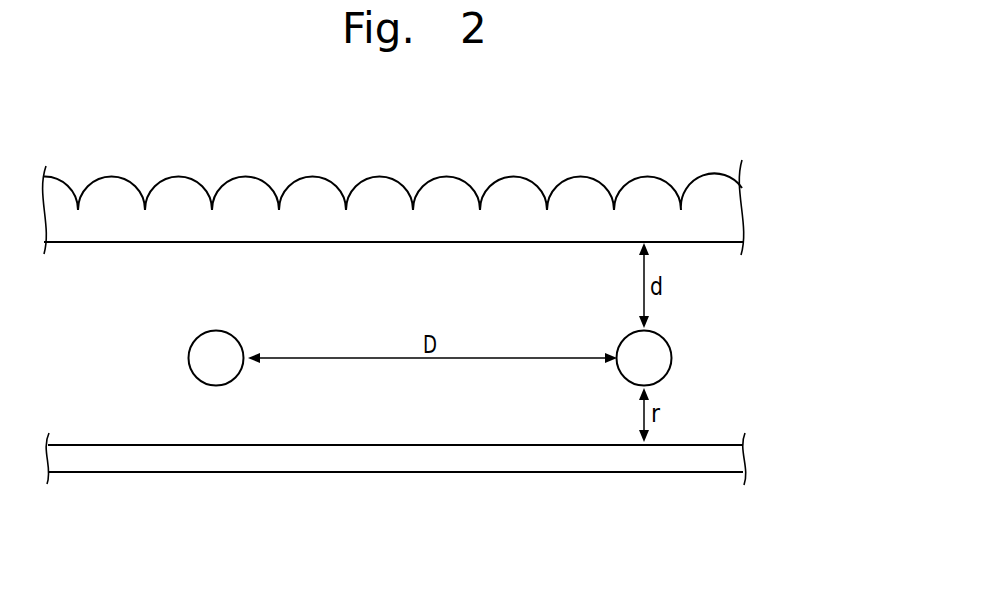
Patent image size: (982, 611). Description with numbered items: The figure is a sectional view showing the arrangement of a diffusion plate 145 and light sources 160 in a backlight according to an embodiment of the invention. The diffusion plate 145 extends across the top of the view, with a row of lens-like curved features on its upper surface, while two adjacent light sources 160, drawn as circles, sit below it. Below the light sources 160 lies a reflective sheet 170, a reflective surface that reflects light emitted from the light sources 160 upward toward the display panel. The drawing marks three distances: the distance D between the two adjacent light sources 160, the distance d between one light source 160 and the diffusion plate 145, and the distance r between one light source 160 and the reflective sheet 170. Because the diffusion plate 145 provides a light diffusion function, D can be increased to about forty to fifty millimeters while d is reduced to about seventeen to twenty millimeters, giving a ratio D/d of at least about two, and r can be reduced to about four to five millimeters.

The diffusion plate 145 is at (512, 200).
The light sources 160 is at (223, 340).
The reflective sheet 170 is at (513, 460).